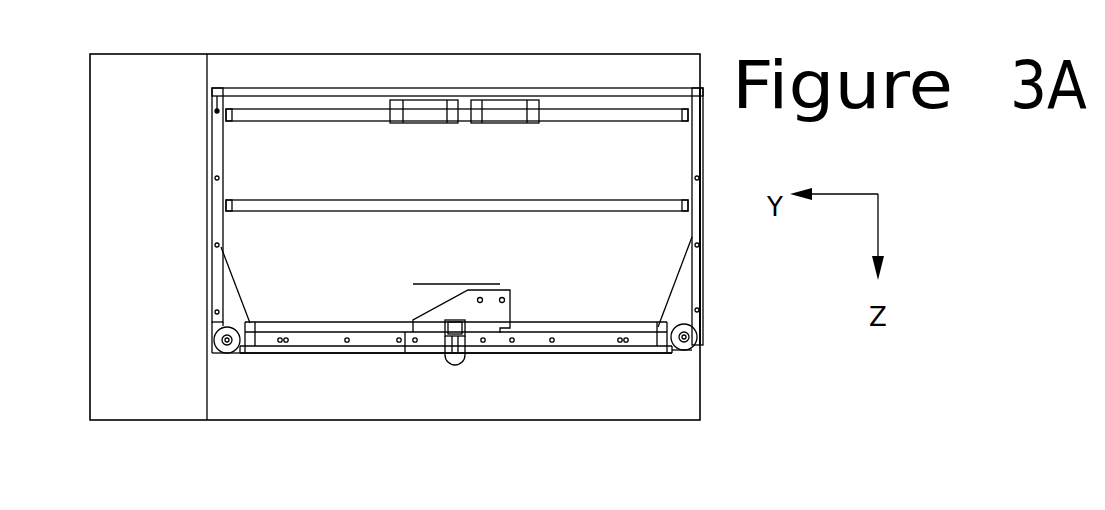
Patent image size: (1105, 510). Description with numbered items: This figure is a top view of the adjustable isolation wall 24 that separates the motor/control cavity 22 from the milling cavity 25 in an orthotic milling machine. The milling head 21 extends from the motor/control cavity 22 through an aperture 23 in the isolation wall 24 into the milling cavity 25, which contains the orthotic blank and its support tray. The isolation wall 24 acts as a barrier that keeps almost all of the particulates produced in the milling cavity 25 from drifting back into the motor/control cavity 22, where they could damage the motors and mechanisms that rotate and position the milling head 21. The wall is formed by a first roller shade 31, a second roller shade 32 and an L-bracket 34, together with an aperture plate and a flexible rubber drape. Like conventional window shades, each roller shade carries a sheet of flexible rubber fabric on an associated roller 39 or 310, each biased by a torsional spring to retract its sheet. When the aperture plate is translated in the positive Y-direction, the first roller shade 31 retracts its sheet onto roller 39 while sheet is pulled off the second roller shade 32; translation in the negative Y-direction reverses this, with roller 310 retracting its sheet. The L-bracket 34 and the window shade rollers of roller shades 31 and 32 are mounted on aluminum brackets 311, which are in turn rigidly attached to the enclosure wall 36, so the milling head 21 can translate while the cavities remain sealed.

The milling head 21 is at (447, 320).
The motor/control cavity 22 is at (632, 277).
The aperture 23 is at (472, 348).
The isolation wall 24 is at (396, 365).
The milling cavity 25 is at (263, 398).
The first roller shade 31 is at (223, 357).
The second roller shade 32 is at (698, 352).
The L-bracket 34 is at (595, 337).
The enclosure wall 36 is at (658, 420).
The roller 39 is at (223, 332).
The roller 310 is at (697, 333).
The aluminum brackets 311 is at (217, 162).